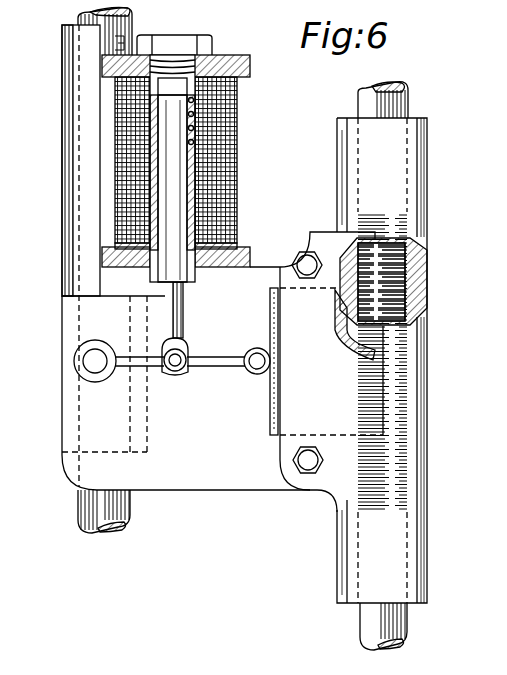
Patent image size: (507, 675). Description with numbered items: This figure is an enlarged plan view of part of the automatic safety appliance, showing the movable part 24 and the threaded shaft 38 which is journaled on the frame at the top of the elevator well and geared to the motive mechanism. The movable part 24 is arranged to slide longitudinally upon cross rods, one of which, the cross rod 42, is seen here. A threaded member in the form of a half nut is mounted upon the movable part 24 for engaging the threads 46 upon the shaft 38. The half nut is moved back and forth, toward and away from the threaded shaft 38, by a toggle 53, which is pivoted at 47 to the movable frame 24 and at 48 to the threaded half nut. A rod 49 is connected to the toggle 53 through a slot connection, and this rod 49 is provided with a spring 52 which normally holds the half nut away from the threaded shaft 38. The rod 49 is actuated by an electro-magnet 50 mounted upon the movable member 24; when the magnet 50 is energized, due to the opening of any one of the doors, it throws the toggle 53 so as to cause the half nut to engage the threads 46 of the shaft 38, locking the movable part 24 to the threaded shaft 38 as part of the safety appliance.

The movable part 24 is at (67, 175).
The threaded shaft 38 is at (410, 95).
The cross rod 42 is at (78, 510).
The threads 46 is at (427, 276).
The pivot 47 is at (92, 365).
The pivot 48 is at (292, 349).
The rod 49 is at (185, 312).
The electro-magnet 50 is at (220, 157).
The spring 52 is at (200, 113).
The toggle 53 is at (220, 366).